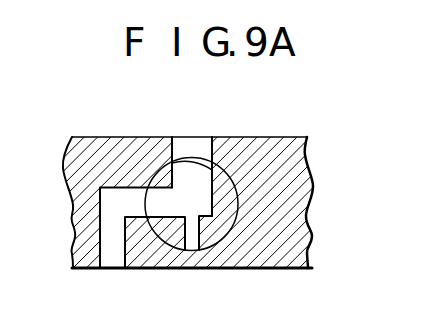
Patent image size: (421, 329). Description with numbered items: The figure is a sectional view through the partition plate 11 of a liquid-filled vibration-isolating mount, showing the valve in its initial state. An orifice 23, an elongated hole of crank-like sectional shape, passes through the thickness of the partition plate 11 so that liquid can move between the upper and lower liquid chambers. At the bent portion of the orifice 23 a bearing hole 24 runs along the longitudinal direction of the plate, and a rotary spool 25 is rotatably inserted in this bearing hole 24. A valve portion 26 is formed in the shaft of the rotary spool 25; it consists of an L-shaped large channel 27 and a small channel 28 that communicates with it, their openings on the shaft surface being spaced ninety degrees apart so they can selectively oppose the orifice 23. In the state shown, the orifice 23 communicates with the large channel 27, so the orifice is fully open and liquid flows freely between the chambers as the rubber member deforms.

The partition plate 11 is at (300, 141).
The orifice 23 is at (199, 150).
The bearing hole 24 is at (213, 244).
The rotary spool 25 is at (233, 167).
The valve portion 26 is at (183, 158).
The large channel 27 is at (200, 178).
The small channel 28 is at (185, 246).